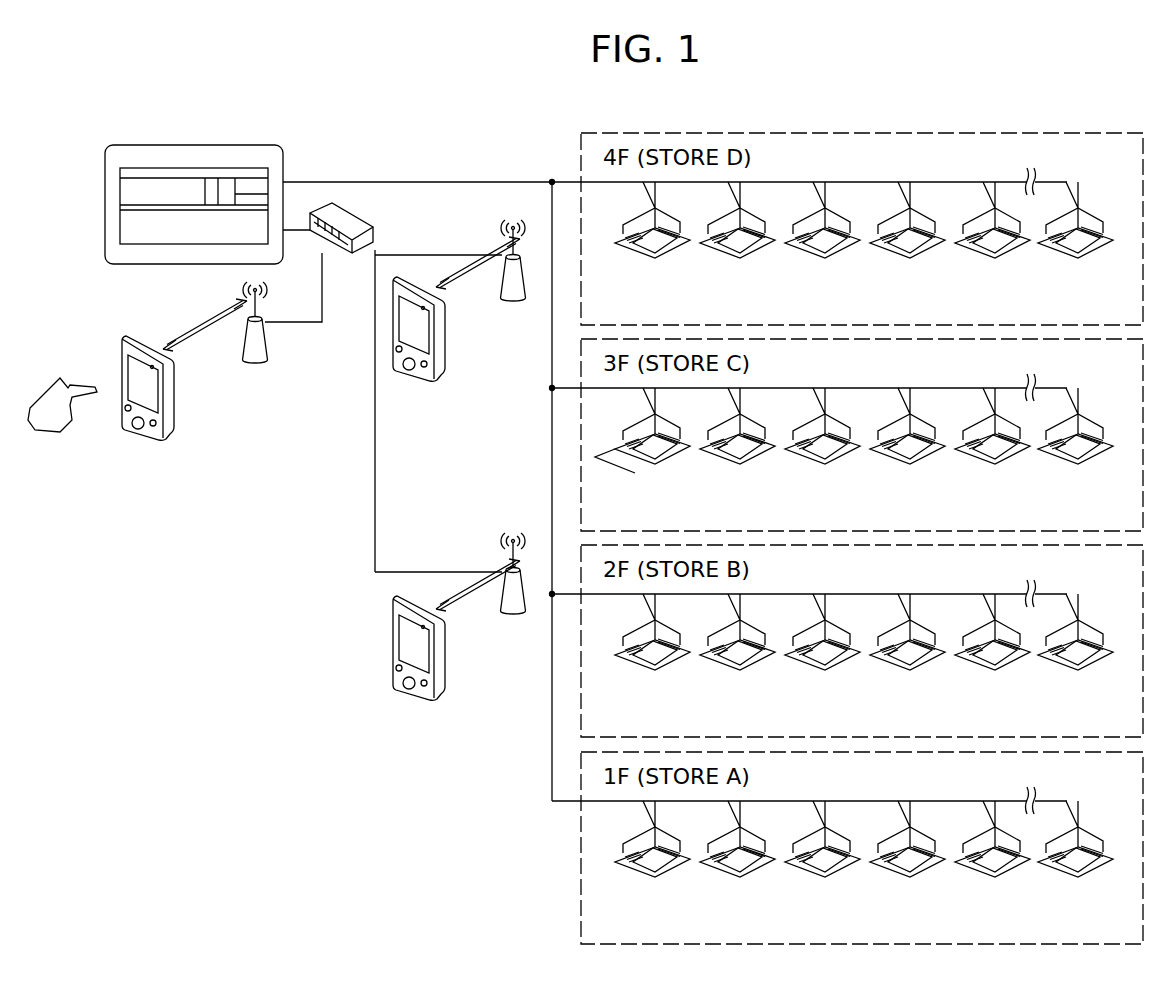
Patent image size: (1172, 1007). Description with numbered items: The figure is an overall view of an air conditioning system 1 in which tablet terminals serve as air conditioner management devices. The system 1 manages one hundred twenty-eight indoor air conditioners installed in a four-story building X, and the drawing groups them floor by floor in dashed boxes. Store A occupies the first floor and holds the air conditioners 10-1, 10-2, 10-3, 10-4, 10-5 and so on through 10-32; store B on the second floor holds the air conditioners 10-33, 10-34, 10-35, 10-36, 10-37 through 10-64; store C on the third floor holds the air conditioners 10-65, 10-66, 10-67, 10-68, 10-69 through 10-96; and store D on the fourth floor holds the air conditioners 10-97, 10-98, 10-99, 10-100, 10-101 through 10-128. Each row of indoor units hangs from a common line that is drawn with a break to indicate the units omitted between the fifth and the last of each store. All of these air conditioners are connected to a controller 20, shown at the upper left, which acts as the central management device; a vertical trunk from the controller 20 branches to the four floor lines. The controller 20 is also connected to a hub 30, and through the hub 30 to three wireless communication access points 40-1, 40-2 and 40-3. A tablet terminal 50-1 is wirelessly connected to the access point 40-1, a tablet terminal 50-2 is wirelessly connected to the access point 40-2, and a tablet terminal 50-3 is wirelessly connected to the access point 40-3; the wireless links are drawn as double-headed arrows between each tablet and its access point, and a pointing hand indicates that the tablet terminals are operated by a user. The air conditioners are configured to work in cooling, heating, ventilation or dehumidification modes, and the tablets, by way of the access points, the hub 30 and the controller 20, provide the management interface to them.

The air conditioning system 1 is at (416, 149).
The controller 20 is at (140, 145).
The hub 30 is at (340, 204).
The wireless communication access point 40-1 is at (253, 362).
The wireless communication access point 40-2 is at (513, 297).
The wireless communication access point 40-3 is at (513, 610).
The tablet terminal 50-1 is at (133, 435).
The tablet terminal 50-2 is at (413, 377).
The tablet terminal 50-3 is at (413, 695).
The air conditioner 10-1 is at (647, 867).
The air conditioner 10-2 is at (732, 867).
The air conditioner 10-3 is at (817, 867).
The air conditioner 10-4 is at (902, 867).
The air conditioner 10-5 is at (988, 867).
The air conditioner 10-32 is at (1072, 867).
The air conditioner 10-33 is at (645, 660).
The air conditioner 10-34 is at (730, 660).
The air conditioner 10-35 is at (815, 660).
The air conditioner 10-36 is at (900, 660).
The air conditioner 10-37 is at (986, 660).
The air conditioner 10-64 is at (1072, 660).
The air conditioner 10-65 is at (642, 454).
The air conditioner 10-66 is at (730, 454).
The air conditioner 10-67 is at (815, 454).
The air conditioner 10-68 is at (900, 454).
The air conditioner 10-69 is at (986, 454).
The air conditioner 10-96 is at (1072, 454).
The air conditioner 10-97 is at (645, 248).
The air conditioner 10-98 is at (730, 248).
The air conditioner 10-99 is at (815, 248).
The air conditioner 10-100 is at (900, 248).
The air conditioner 10-101 is at (986, 248).
The air conditioner 10-128 is at (1072, 248).